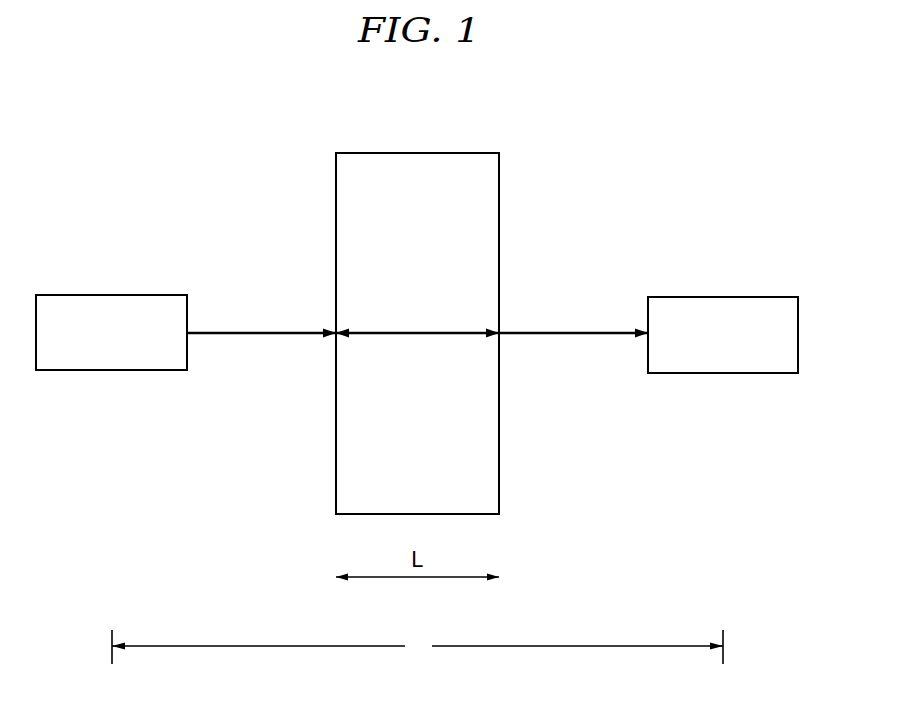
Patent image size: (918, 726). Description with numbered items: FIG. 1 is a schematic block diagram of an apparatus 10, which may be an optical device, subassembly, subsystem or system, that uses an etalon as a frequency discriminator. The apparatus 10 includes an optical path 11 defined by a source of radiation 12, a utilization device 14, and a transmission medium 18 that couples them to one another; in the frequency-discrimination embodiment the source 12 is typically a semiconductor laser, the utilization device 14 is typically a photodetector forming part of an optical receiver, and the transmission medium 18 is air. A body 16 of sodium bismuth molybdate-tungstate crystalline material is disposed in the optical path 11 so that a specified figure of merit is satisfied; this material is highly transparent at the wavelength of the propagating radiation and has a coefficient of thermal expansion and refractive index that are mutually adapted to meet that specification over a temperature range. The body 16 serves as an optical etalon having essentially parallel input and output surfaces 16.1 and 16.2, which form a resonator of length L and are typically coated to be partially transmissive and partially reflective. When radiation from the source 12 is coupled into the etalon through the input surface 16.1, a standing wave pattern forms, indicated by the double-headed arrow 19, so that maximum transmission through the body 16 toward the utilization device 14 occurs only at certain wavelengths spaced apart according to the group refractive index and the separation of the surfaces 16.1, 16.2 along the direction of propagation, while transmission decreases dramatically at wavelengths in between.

The apparatus 10 is at (609, 133).
The optical path 11 is at (417, 647).
The source of radiation 12 is at (110, 295).
The utilization device 14 is at (722, 297).
The body of NaBi(Mo1-xWxO4)2 crystalline material 16 is at (483, 190).
The input surface 16.1 is at (336, 190).
The output surface 16.2 is at (499, 282).
The transmission medium 18 is at (255, 335).
The double-headed arrow 19 is at (415, 335).